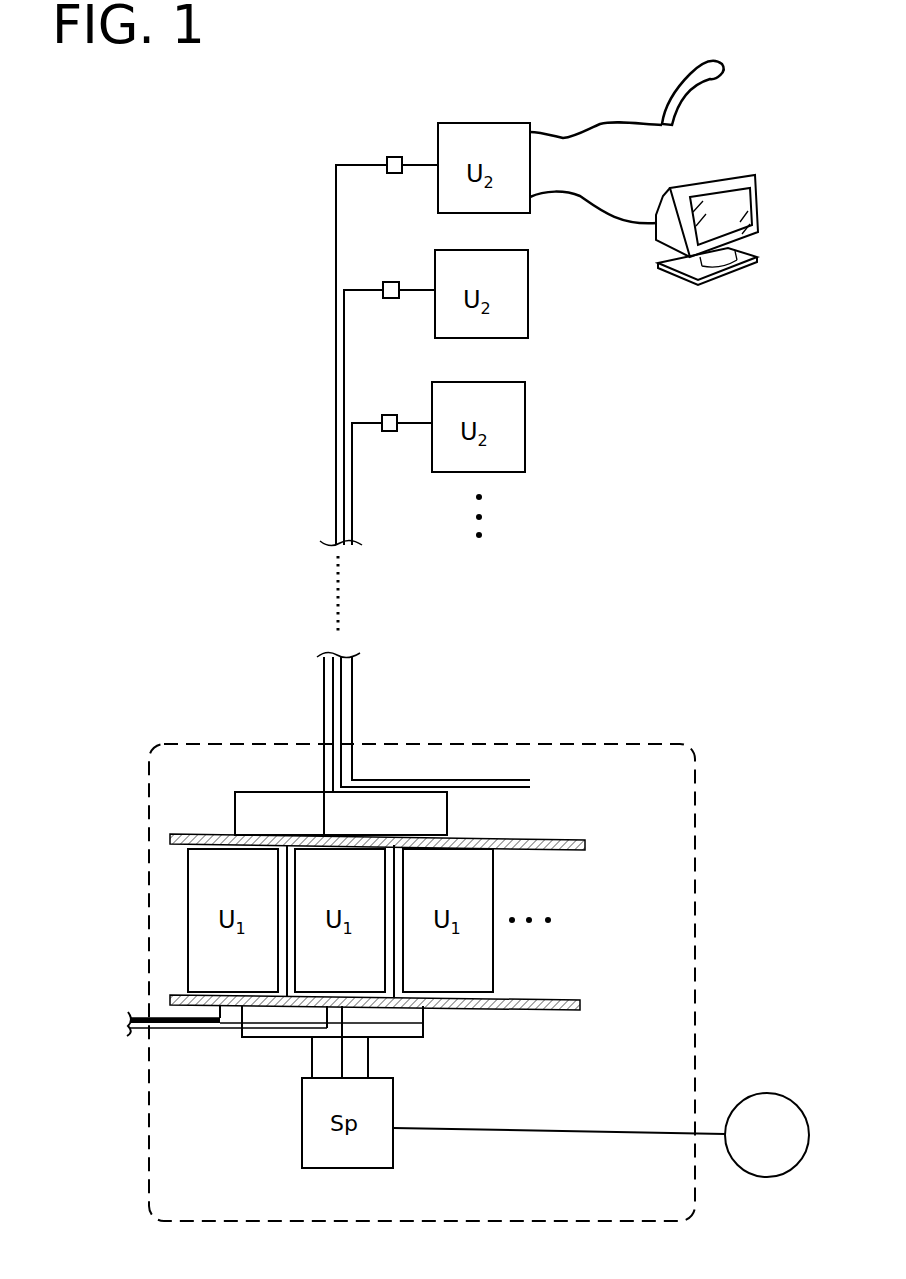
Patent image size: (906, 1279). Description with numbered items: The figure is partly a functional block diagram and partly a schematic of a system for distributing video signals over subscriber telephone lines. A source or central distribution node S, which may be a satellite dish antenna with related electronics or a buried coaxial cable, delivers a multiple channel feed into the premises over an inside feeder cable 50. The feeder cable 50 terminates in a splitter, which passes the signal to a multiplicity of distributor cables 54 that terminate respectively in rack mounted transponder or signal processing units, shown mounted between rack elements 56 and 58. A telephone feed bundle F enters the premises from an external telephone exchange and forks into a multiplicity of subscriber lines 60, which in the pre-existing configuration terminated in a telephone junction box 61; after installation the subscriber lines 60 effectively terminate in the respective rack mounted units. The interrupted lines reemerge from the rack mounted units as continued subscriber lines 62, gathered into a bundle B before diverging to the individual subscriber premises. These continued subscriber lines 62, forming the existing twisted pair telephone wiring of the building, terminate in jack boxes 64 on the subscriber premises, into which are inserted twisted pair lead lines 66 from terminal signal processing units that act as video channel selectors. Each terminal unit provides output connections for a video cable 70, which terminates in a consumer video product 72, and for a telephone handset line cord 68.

The inside feeder cable 50 is at (500, 1128).
The distributor cables 54 is at (265, 1038).
The rack element 56 is at (548, 837).
The rack element 58 is at (548, 998).
The subscriber lines 60 is at (183, 1030).
The telephone junction box 61 is at (589, 724).
The continued subscriber lines 62 is at (250, 792).
The jack boxes 64 is at (391, 156).
The twisted pair lead lines 66 is at (415, 168).
The telephone handset line cord 68 is at (580, 132).
The video cable 70 is at (603, 212).
The consumer video product 72 is at (758, 193).
The bundle B is at (370, 652).
The telephone feed bundle F is at (121, 1006).
The source or central distribution node S is at (767, 1135).